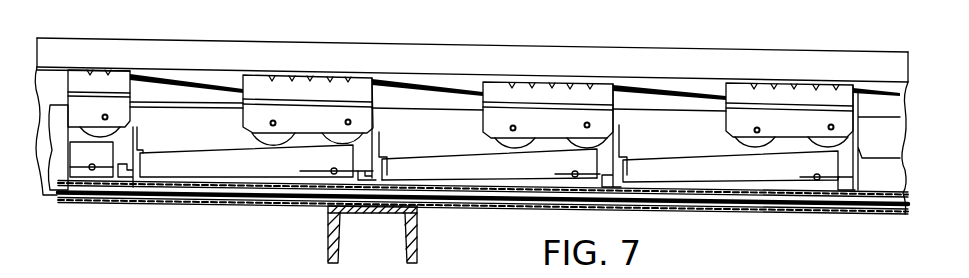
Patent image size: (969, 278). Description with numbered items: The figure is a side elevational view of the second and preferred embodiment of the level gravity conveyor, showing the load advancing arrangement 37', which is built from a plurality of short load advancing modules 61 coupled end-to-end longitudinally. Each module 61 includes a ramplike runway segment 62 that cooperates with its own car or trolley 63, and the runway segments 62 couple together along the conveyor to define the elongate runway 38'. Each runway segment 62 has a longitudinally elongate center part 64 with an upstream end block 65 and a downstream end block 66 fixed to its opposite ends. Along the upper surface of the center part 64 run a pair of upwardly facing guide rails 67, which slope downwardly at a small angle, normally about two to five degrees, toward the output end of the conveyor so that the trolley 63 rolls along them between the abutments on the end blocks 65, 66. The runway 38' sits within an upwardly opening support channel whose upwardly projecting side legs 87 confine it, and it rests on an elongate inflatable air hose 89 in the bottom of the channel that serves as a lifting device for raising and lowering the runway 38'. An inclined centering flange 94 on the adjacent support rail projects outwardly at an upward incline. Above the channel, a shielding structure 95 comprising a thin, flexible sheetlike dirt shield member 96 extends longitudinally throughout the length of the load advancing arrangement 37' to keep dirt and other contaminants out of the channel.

The load advancing arrangement 37' is at (472, 41).
The elongate runway 38' is at (483, 225).
The load advancing module 61 is at (206, 182).
The runway segment 62 is at (266, 164).
The trolley 63 is at (379, 99).
The center part 64 is at (431, 168).
The end block 65 is at (613, 142).
The end block 66 is at (379, 200).
The guide rails 67 is at (180, 116).
The side legs 87 is at (53, 167).
The inflatable air hose 89 is at (95, 200).
The centering flange 94 is at (826, 58).
The shielding structure 95 is at (701, 80).
The dirt shield member 96 is at (190, 82).